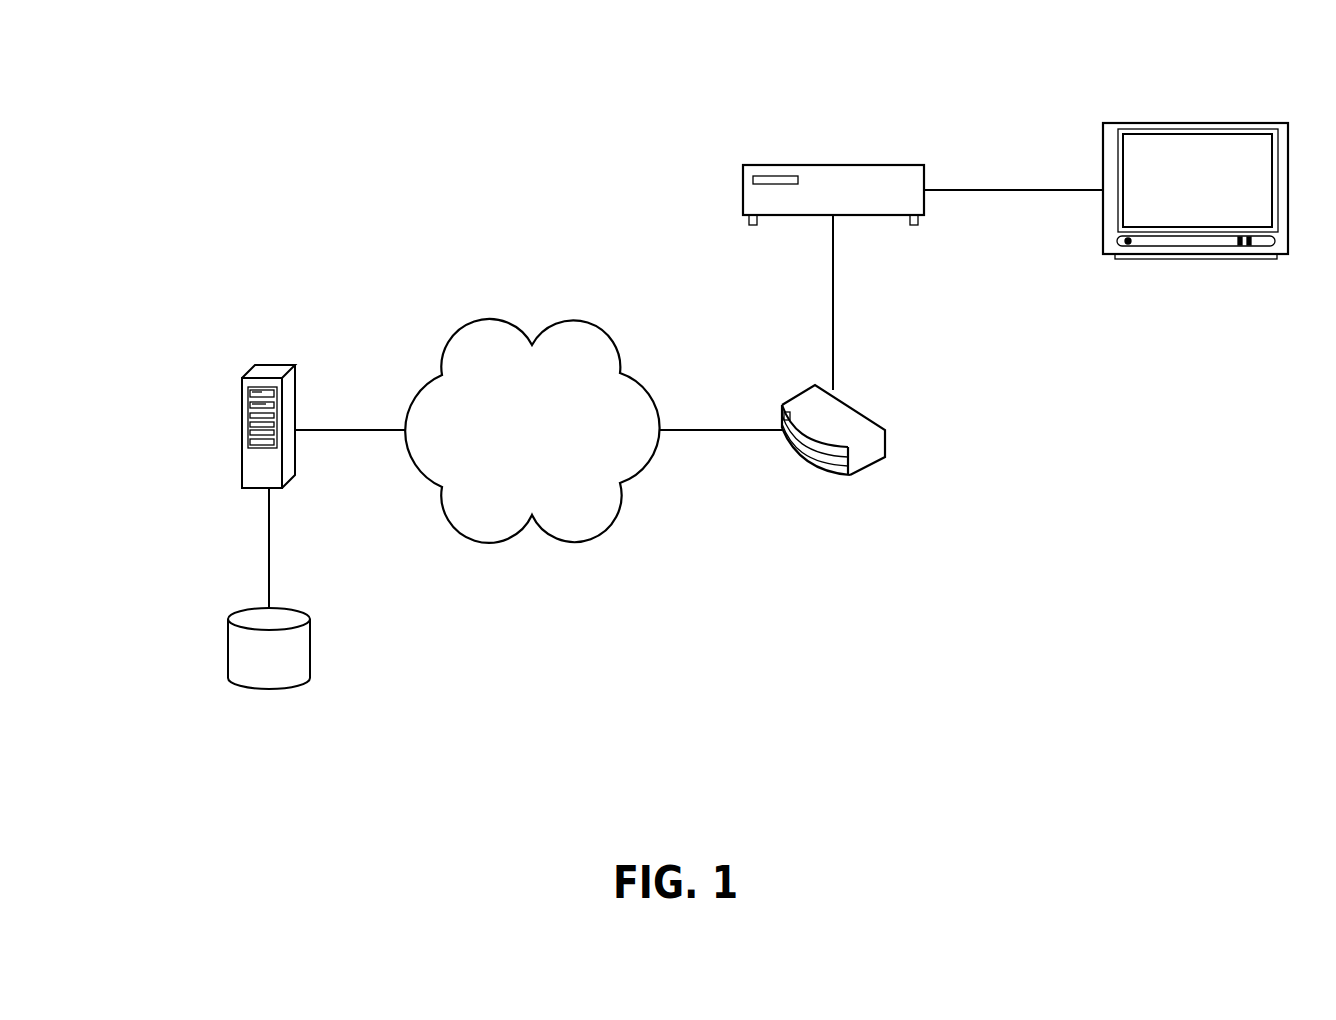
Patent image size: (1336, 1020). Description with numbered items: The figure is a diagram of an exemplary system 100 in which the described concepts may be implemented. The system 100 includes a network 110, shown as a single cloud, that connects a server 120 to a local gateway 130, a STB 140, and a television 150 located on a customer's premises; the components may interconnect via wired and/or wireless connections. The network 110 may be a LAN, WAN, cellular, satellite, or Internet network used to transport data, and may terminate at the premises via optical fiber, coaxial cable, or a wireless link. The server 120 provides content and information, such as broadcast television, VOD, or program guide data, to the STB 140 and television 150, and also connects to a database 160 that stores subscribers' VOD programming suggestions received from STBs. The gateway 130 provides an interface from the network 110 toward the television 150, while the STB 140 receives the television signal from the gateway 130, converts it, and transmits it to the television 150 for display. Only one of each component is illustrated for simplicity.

The system 100 is at (258, 88).
The network 110 is at (532, 431).
The server 120 is at (252, 370).
The local gateway 130 is at (857, 410).
The STB 140 is at (777, 165).
The television 150 is at (1103, 140).
The database 160 is at (243, 608).